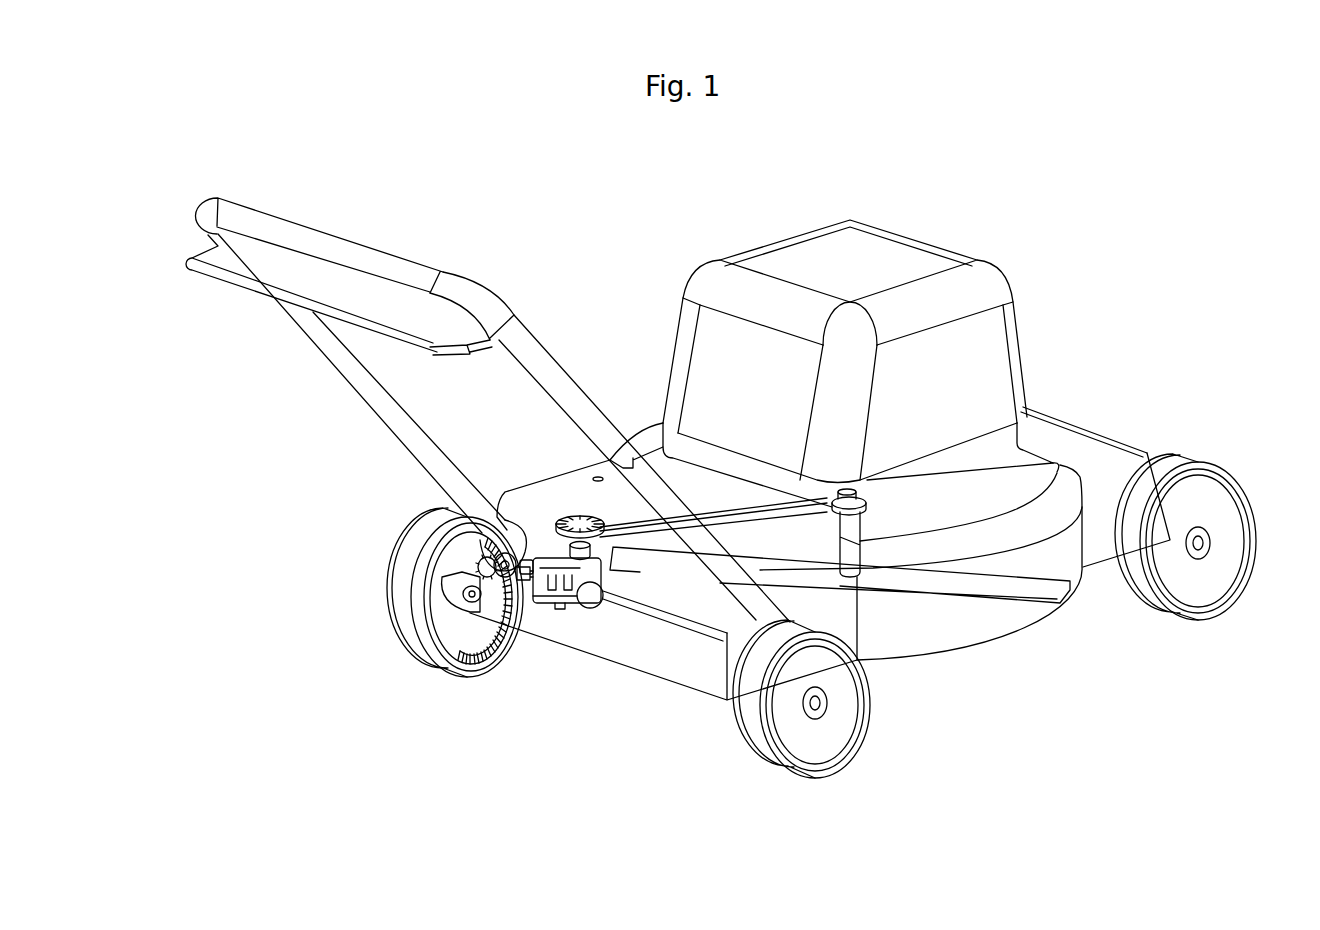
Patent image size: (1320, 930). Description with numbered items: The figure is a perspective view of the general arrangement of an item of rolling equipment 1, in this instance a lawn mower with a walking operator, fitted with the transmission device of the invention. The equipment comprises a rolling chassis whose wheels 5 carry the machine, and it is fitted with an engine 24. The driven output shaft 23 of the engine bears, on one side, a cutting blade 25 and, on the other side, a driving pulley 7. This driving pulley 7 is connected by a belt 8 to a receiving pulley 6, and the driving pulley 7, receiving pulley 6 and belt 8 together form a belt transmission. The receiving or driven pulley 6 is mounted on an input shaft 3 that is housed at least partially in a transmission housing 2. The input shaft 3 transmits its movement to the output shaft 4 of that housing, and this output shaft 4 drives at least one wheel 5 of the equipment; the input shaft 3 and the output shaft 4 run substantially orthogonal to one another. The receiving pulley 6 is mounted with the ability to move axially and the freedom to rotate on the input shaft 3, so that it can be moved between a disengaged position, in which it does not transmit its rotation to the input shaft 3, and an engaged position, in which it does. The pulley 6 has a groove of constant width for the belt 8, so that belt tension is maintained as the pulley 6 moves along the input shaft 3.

The rolling equipment 1 is at (1073, 417).
The transmission housing 2 is at (585, 620).
The input shaft 3 is at (563, 597).
The output shaft 4 is at (515, 575).
The wheel 5 is at (422, 648).
The receiving pulley 6 is at (567, 520).
The driving pulley 7 is at (853, 492).
The belt 8 is at (725, 500).
The driven output shaft 23 is at (863, 528).
The engine 24 is at (933, 255).
The cutting blade 25 is at (985, 592).